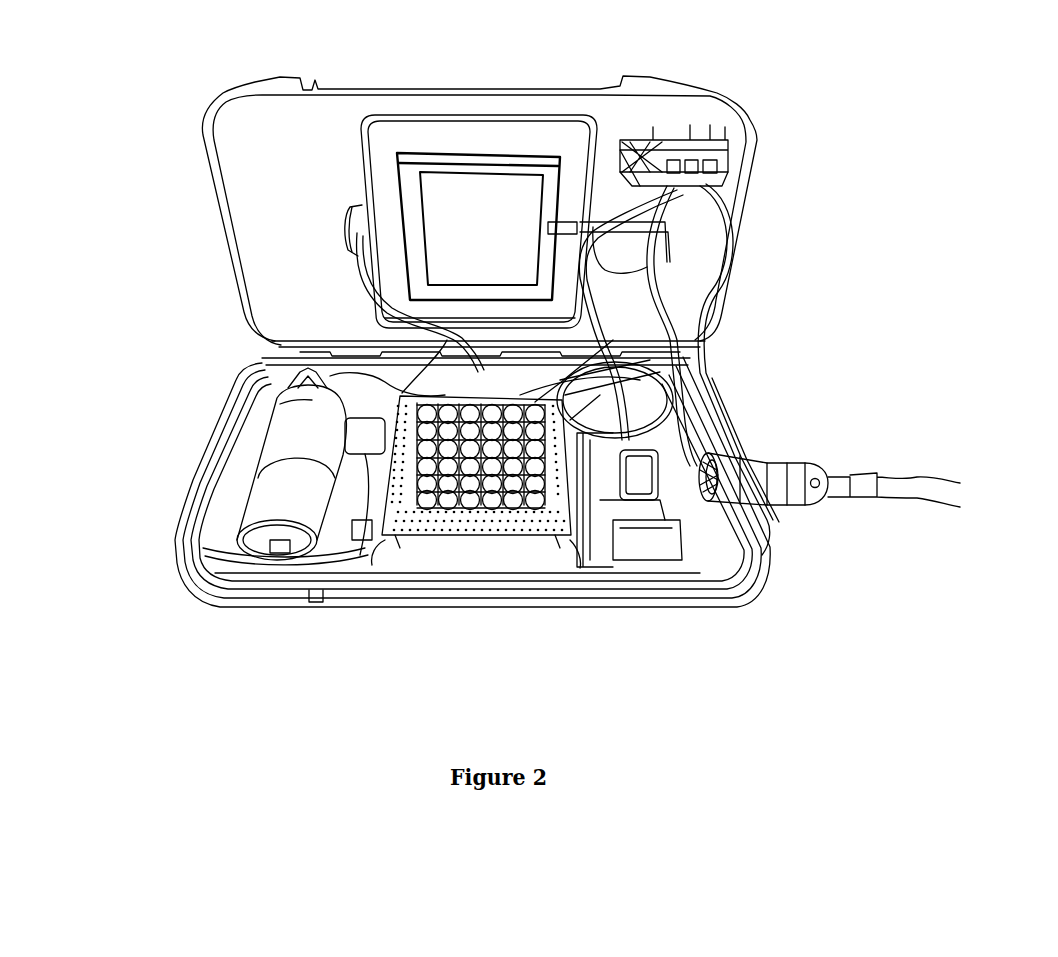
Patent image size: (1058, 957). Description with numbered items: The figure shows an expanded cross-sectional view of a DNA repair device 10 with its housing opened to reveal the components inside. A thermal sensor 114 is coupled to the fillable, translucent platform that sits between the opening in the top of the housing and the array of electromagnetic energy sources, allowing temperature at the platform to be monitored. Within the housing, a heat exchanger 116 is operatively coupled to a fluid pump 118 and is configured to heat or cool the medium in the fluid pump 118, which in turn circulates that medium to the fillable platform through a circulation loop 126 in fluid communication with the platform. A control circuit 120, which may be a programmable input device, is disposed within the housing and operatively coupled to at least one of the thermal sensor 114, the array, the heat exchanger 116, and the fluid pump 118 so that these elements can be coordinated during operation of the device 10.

The DNA repair device 10 is at (126, 66).
The circulation loop 126 is at (391, 222).
The thermal sensor 114 is at (549, 226).
The fluid pump 118 is at (281, 398).
The heat exchanger 116 is at (353, 497).
The control circuit 120 is at (609, 557).